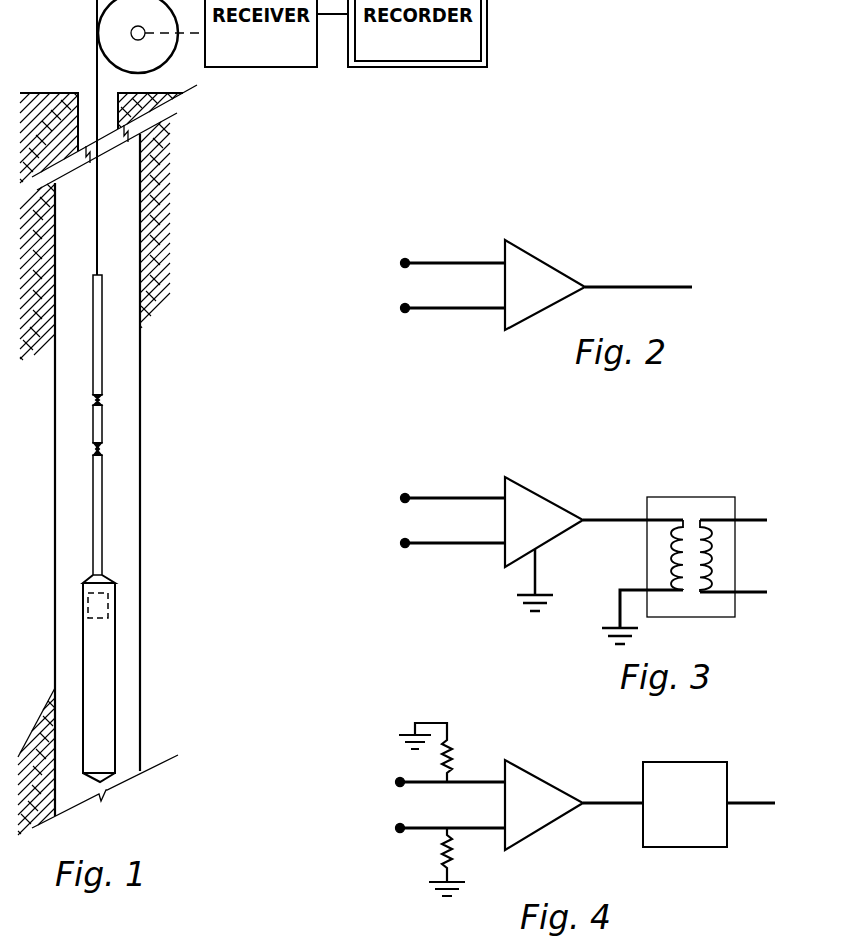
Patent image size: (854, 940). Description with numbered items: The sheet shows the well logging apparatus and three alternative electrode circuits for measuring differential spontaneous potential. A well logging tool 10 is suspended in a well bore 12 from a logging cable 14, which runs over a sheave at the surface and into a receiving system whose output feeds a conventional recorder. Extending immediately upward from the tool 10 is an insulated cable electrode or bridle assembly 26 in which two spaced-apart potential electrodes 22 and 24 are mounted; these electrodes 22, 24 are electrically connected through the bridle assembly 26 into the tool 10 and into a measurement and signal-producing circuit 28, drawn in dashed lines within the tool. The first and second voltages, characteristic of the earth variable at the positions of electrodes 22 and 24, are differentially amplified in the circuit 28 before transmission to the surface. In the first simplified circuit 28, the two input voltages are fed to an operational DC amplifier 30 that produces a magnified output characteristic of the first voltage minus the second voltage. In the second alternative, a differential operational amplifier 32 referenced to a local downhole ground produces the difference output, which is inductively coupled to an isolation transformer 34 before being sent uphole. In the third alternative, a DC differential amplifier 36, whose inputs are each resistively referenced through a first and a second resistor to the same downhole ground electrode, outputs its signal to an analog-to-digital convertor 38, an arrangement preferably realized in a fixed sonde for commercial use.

In FIG. 1, the well logging tool 10 is at (118, 680).
In FIG. 1, the well bore 12 is at (141, 505).
In FIG. 1, the logging cable 14 is at (99, 212).
In FIG. 1, the potential electrode 22 is at (102, 401).
In FIG. 2, the potential electrode 22 is at (404, 262).
In FIG. 3, the potential electrode 22 is at (404, 497).
In FIG. 4, the potential electrode 22 is at (399, 781).
In FIG. 1, the potential electrode 24 is at (102, 455).
In FIG. 2, the potential electrode 24 is at (404, 308).
In FIG. 3, the potential electrode 24 is at (404, 542).
In FIG. 4, the potential electrode 24 is at (399, 827).
In FIG. 1, the insulated cable electrode or bridle assembly 26 is at (103, 338).
In FIG. 1, the measurement and signal-producing circuit 28 is at (110, 601).
In FIG. 2, the measurement and signal-producing circuit 28 is at (545, 224).
In FIG. 3, the measurement and signal-producing circuit 28 is at (545, 465).
In FIG. 4, the measurement and signal-producing circuit 28 is at (539, 732).
In FIG. 2, the operational DC amplifier 30 is at (547, 265).
In FIG. 3, the differential operational amplifier 32 is at (552, 535).
In FIG. 3, the isolation transformer 34 is at (678, 500).
In FIG. 4, the DC differential amplifier 36 is at (548, 817).
In FIG. 4, the analog-to-digital convertor 38 is at (675, 762).